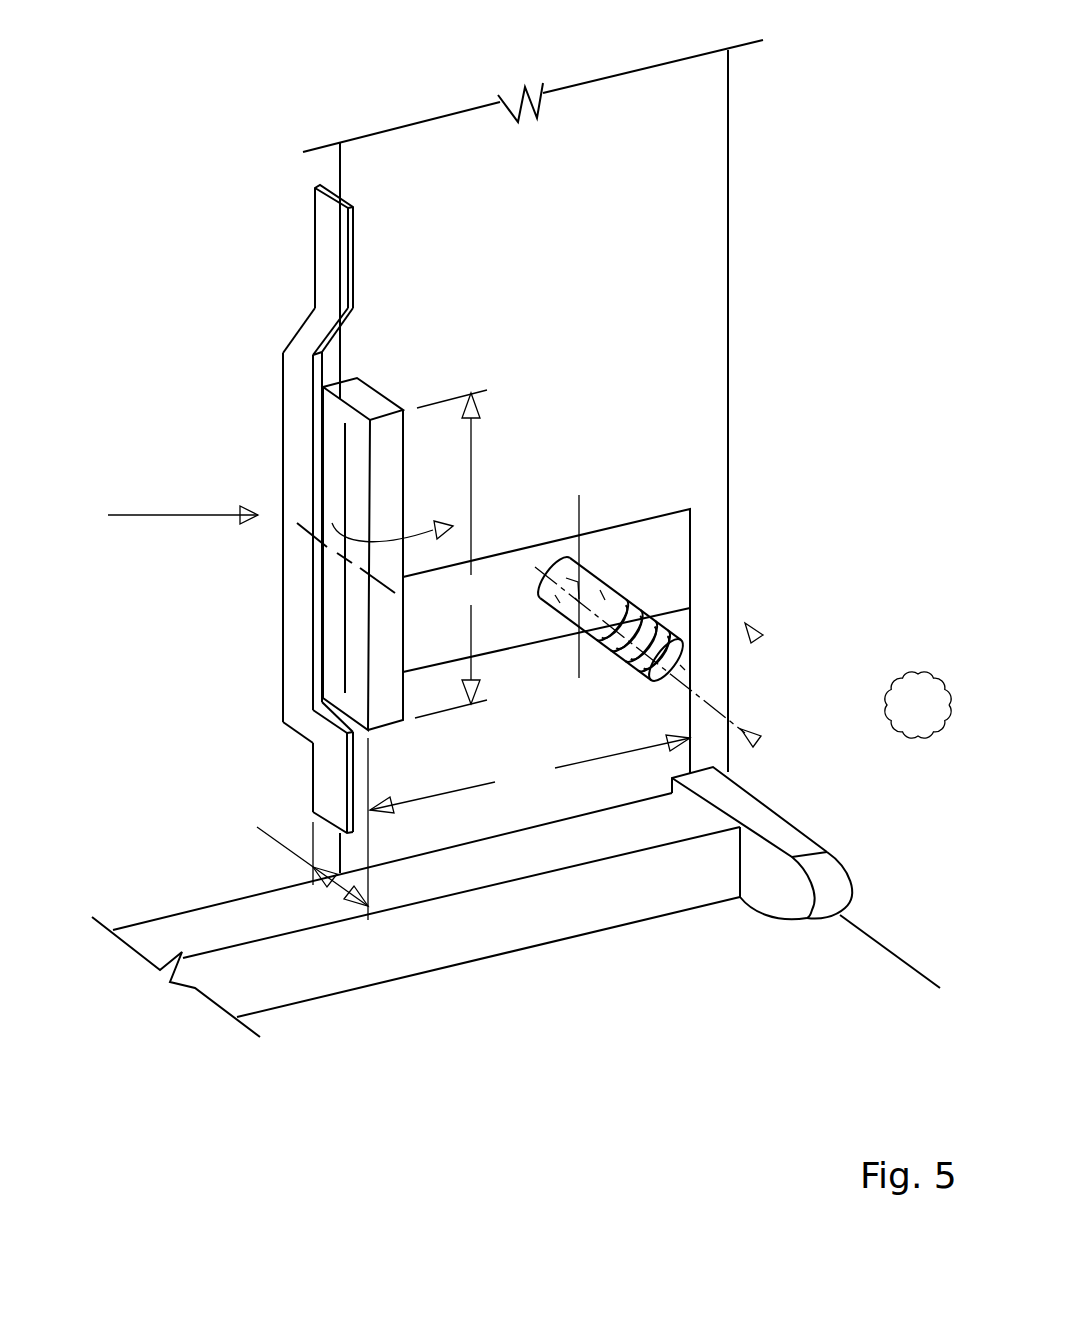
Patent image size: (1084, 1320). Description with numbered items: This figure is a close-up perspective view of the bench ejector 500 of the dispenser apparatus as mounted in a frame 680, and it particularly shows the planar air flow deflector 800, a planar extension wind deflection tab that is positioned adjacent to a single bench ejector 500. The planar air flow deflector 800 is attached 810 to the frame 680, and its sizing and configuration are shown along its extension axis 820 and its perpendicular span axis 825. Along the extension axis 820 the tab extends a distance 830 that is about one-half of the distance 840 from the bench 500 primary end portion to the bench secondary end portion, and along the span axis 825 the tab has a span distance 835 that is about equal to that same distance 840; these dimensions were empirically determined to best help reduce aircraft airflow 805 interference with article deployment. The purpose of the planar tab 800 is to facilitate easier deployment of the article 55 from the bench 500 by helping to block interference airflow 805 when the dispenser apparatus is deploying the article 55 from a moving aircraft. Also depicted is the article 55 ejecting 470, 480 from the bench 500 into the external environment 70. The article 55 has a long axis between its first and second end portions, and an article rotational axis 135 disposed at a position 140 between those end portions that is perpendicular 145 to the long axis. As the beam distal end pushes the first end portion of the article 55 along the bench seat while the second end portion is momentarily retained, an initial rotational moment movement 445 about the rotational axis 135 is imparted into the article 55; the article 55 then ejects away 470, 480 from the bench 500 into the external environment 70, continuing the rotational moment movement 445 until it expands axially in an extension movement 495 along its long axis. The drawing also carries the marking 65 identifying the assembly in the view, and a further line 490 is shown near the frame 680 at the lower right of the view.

The external environment 70 is at (836, 302).
The planar air flow deflector 800 is at (264, 509).
The attachment of the planar tab to the frame 810 is at (318, 412).
The span axis 825 is at (345, 446).
The extension axis 820 is at (303, 535).
The bench ejector 500 is at (459, 649).
The article 55 is at (667, 619).
The article rotational axis 135 is at (580, 510).
The position of the rotational axis 140 is at (578, 598).
The perpendicular relationship 145 is at (560, 600).
The frame 680 is at (313, 975).
The ejecting 470 is at (823, 764).
The ejecting away 480 is at (823, 764).
The floor edge 490 is at (908, 966).
The span distance 835 is at (453, 554).
The distance from bench primary end portion to secondary end portion 840 is at (529, 827).
The extension distance 830 is at (286, 861).
The interference airflow 805 is at (128, 515).
The rotational moment movement 445 is at (757, 639).
The axial extension movement 495 is at (757, 741).
The assembly 65 is at (935, 719).